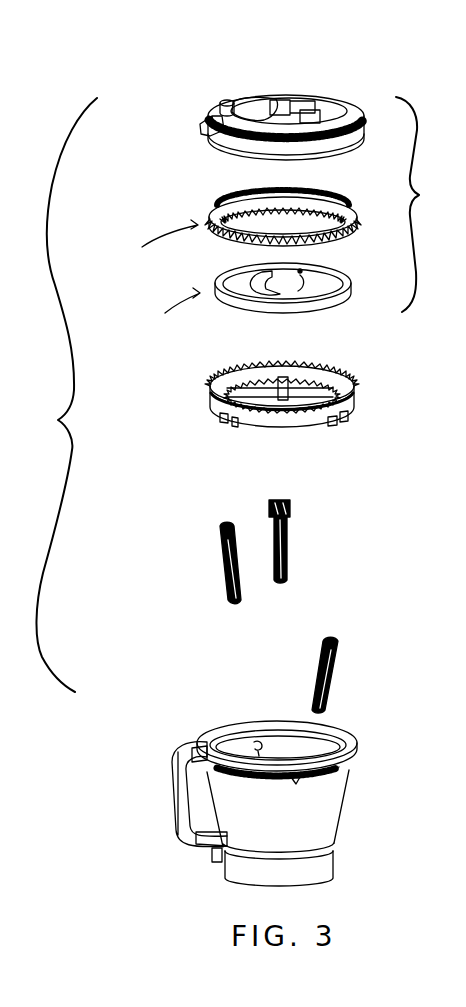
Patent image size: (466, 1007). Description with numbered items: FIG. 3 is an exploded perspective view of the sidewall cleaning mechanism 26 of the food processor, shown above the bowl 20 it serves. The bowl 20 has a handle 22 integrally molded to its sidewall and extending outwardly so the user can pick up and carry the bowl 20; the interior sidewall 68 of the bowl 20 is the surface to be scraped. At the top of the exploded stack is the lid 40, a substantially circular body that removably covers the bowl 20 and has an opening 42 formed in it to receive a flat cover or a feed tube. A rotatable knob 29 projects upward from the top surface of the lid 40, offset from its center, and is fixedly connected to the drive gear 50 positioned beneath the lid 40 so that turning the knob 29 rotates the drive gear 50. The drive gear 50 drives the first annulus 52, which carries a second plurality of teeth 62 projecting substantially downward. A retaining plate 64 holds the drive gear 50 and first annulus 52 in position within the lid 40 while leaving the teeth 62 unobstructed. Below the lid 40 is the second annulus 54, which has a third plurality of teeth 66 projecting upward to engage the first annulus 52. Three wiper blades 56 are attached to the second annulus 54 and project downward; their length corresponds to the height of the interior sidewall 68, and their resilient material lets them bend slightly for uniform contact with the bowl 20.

The bowl 20 is at (310, 779).
The handle 22 is at (180, 798).
The sidewall cleaning mechanism 26 is at (49, 395).
The rotatable knob 29 is at (226, 100).
The lid 40 is at (431, 204).
The opening 42 is at (305, 108).
The drive gear 50 is at (275, 209).
The first annulus 52 is at (153, 245).
The second annulus 54 is at (334, 385).
The wiper blades 56 is at (337, 667).
The second plurality of teeth 62 is at (340, 245).
The retaining plate 64 is at (241, 304).
The third plurality of teeth 66 is at (310, 367).
The interior sidewall 68 is at (273, 752).